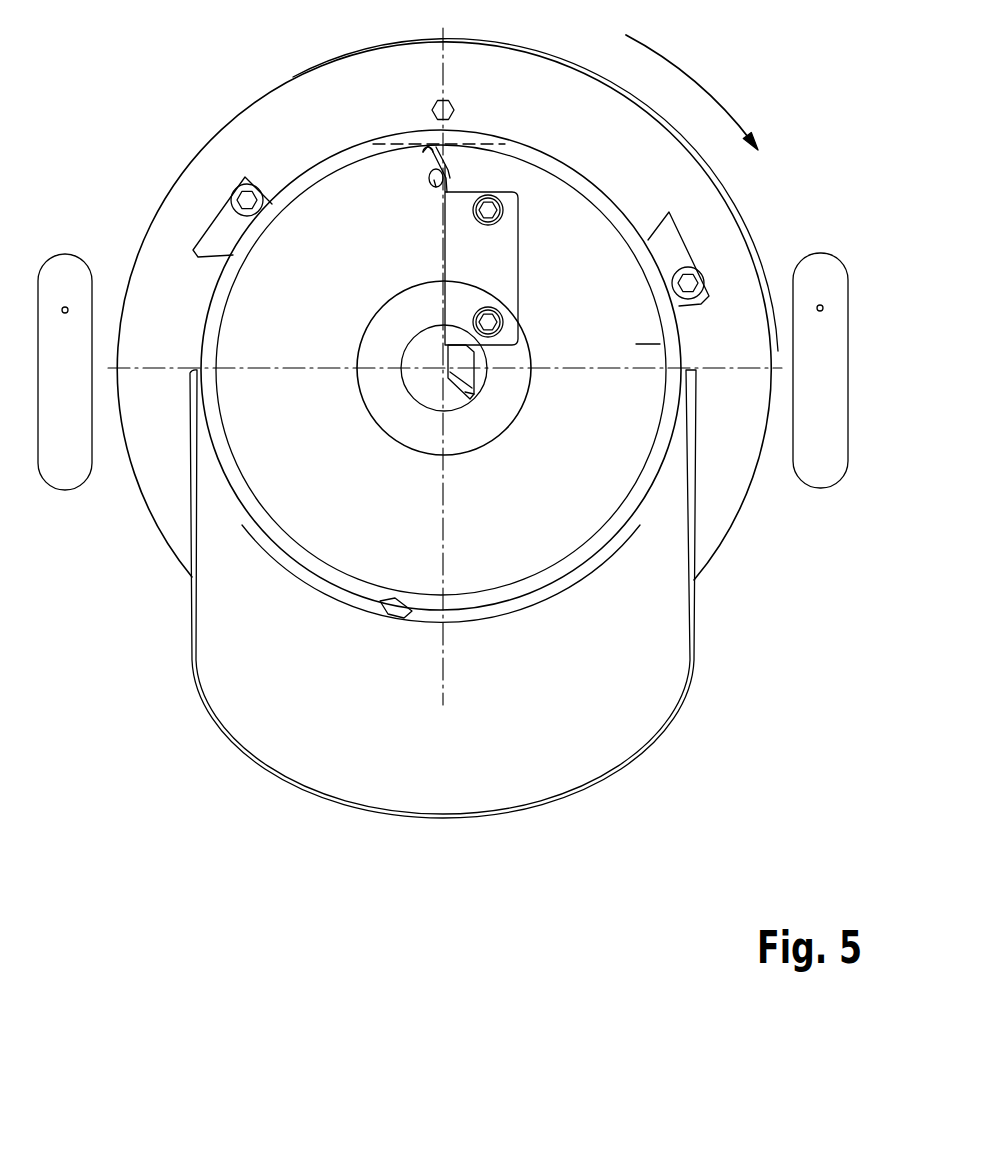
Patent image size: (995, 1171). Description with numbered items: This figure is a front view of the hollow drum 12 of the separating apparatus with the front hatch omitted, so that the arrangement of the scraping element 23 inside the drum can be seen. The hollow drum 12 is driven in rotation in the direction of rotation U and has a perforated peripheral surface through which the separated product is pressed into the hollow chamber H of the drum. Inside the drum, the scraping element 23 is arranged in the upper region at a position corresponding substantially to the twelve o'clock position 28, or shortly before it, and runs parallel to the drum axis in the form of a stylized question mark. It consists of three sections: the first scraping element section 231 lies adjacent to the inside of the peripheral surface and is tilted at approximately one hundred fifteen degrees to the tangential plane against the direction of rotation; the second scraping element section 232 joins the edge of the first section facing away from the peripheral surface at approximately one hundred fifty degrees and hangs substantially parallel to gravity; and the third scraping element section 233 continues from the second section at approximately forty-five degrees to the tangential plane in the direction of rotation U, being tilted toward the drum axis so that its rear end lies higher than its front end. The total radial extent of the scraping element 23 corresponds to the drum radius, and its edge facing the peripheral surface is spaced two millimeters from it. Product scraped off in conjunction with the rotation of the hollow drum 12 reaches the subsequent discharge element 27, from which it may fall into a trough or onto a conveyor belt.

The hollow drum 12 is at (318, 218).
The scraping element 23 is at (386, 368).
The second scraping element section 232 is at (447, 358).
The third scraping element section 233 is at (458, 400).
The first scraping element section 231 is at (436, 160).
The 12 o'clock position 28 is at (442, 146).
The discharge element 27 is at (482, 792).
The hollow chamber H is at (638, 343).
The direction of rotation U is at (692, 92).